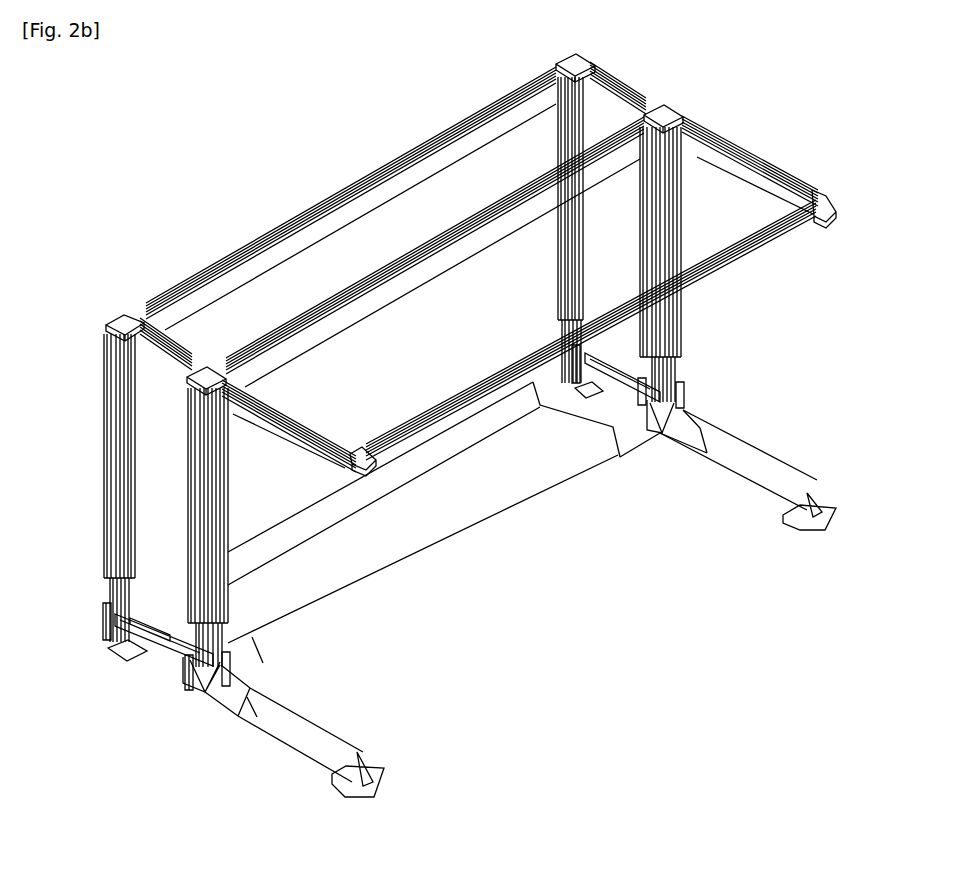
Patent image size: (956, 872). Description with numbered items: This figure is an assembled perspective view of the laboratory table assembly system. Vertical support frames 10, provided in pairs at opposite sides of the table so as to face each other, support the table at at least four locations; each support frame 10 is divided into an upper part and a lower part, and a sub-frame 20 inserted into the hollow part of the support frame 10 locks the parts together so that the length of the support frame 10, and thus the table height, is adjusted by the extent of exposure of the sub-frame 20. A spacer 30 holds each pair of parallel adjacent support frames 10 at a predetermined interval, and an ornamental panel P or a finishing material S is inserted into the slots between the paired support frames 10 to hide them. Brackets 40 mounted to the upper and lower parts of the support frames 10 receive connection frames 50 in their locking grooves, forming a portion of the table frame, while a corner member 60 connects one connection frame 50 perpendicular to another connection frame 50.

The support frame 10 is at (356, 408).
The sub-frame 20 is at (182, 665).
The spacer 30 is at (162, 648).
The bracket 40 is at (150, 298).
The connection frame 50 is at (232, 246).
The corner member 60 is at (390, 460).
The ornamental panel P is at (147, 445).
The finishing material S is at (232, 521).